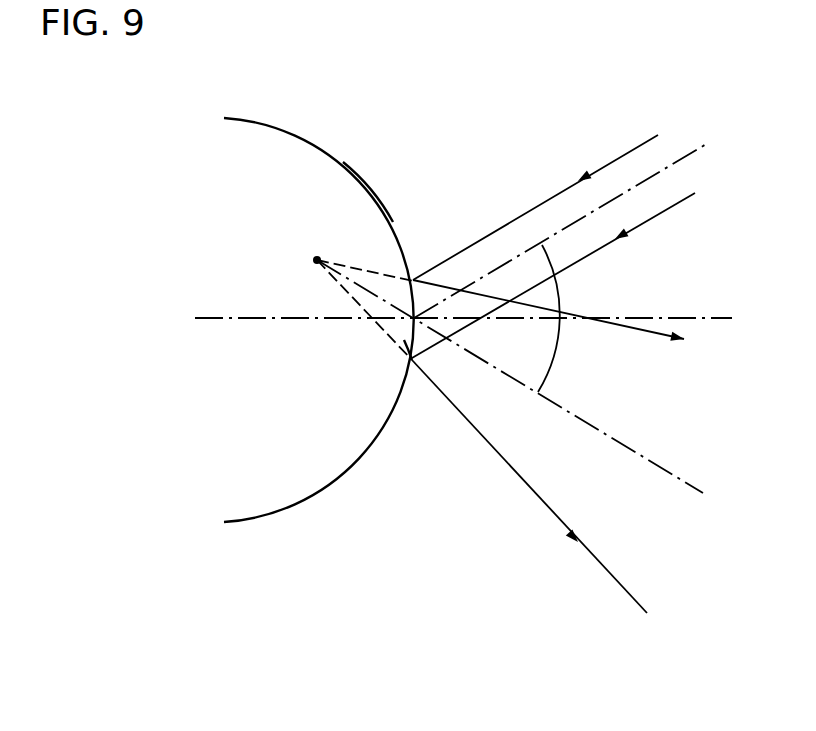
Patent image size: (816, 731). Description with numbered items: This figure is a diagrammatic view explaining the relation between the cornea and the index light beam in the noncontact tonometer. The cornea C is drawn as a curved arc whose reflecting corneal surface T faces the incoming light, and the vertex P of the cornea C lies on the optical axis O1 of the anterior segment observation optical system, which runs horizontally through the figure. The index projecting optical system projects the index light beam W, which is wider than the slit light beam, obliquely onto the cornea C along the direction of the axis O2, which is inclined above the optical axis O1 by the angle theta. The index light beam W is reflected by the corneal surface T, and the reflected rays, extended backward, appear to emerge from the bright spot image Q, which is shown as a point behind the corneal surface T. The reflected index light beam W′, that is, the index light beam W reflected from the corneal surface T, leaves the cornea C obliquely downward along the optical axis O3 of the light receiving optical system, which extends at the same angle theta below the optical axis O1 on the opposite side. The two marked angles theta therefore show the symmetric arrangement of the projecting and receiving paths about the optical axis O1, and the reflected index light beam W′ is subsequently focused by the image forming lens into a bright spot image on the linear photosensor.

The cornea C is at (331, 124).
The corneal surface T is at (367, 186).
The index light beam W is at (552, 195).
The reflected index light beam W′ is at (503, 460).
The optical axis of the anterior segment observation optical system O1 is at (687, 316).
The second optical axis O2 is at (687, 157).
The optical axis of the light receiving optical system O3 is at (668, 468).
The bright spot image Q is at (317, 260).
The vertex of the cornea P is at (410, 341).
The angle theta is at (559, 318).